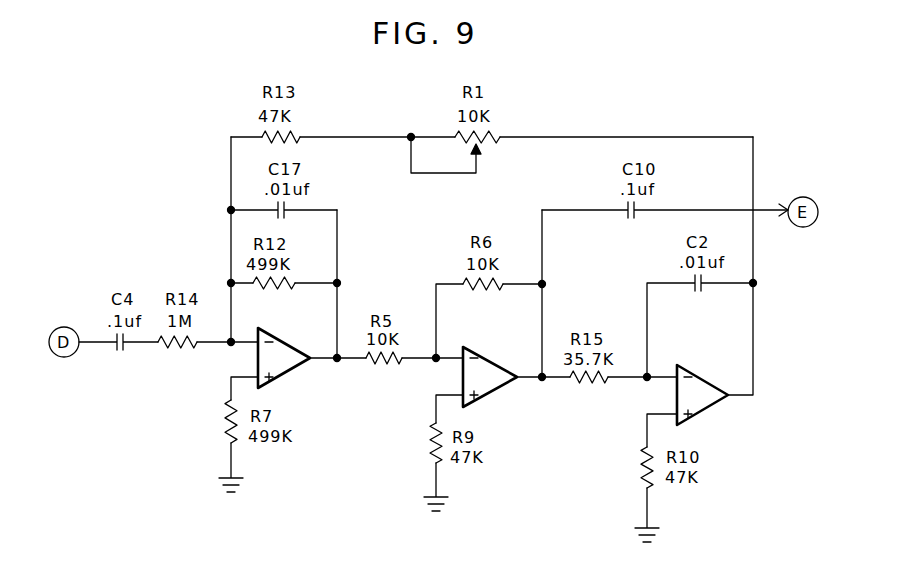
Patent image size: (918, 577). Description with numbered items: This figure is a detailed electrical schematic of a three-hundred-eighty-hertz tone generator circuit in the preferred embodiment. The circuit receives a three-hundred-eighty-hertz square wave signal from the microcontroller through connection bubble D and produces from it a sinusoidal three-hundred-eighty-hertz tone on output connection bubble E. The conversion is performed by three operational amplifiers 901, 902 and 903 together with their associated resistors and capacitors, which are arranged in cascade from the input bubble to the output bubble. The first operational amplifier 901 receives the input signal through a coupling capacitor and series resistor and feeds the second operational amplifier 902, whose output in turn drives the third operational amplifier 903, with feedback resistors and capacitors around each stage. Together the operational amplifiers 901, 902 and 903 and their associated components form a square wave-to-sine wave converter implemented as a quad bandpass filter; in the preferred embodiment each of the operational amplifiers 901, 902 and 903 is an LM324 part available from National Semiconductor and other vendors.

The operational amplifier 901 is at (303, 368).
The operational amplifier 902 is at (508, 387).
The operational amplifier 903 is at (714, 406).